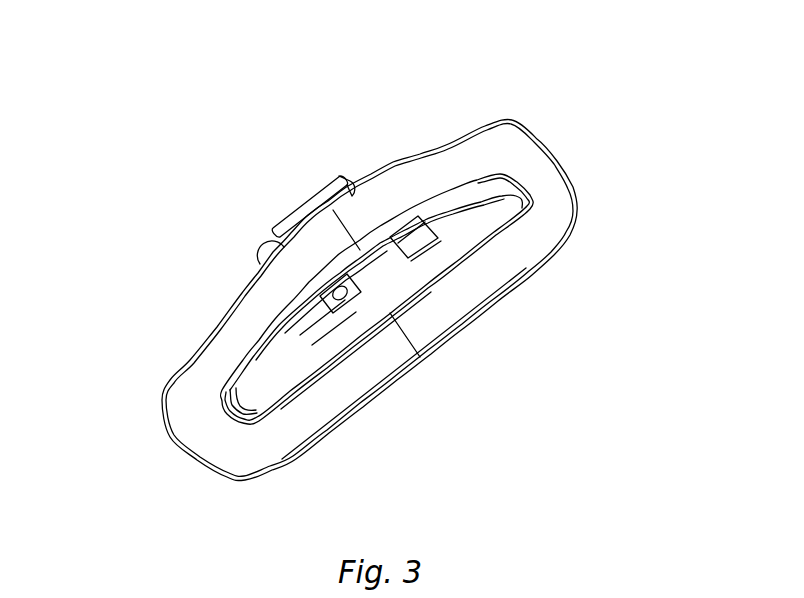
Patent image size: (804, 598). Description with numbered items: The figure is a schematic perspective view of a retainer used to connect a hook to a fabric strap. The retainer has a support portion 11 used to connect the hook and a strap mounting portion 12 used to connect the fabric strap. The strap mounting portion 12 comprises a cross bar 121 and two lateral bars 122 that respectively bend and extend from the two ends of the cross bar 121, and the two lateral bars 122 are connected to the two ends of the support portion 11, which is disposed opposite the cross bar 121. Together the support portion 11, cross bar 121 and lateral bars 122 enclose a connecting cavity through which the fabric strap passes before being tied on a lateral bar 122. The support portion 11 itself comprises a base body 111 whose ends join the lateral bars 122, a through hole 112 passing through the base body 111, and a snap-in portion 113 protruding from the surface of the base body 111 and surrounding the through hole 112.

The support portion 11 is at (360, 217).
The base body 111 is at (225, 342).
The through hole 112 is at (350, 290).
The snap-in portion 113 is at (300, 213).
The strap mounting portion 12 is at (463, 292).
The cross bar 121 is at (517, 253).
The lateral bars 122 is at (550, 176).